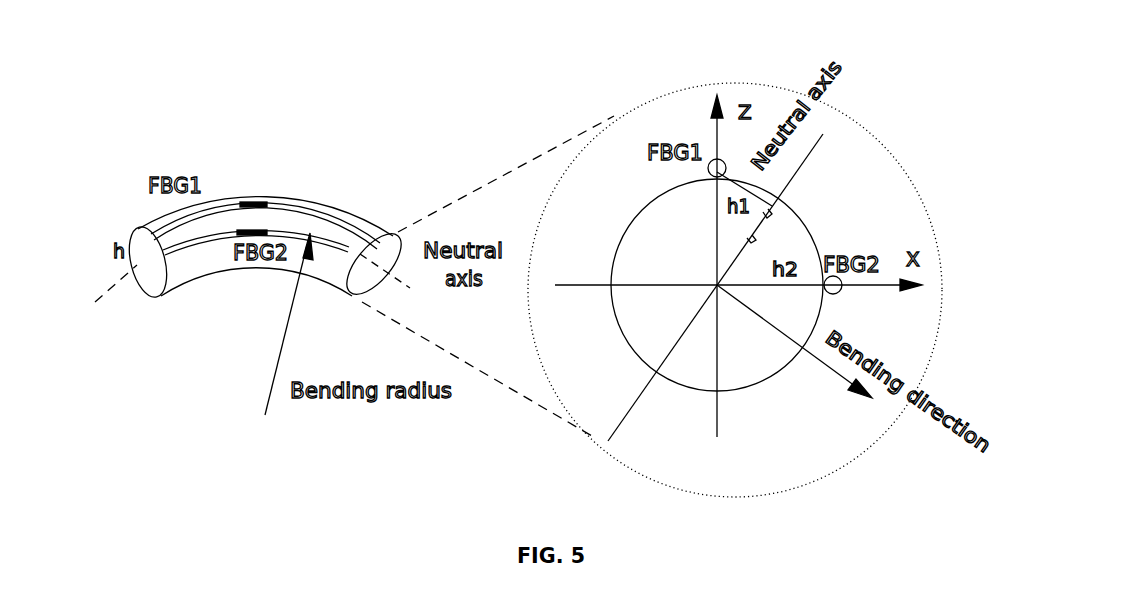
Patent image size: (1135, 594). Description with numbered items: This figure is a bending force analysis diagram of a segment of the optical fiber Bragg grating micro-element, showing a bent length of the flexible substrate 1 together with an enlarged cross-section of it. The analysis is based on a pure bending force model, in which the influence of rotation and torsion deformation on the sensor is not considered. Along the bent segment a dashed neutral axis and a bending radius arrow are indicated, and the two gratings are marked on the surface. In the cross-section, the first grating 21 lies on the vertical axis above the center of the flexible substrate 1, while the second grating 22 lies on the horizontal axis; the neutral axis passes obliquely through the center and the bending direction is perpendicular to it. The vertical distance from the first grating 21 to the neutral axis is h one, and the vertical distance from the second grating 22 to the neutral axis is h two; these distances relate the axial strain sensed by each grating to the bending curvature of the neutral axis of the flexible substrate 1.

The flexible substrate 1 is at (988, 158).
The first grating 21 is at (721, 174).
The second grating 22 is at (757, 240).